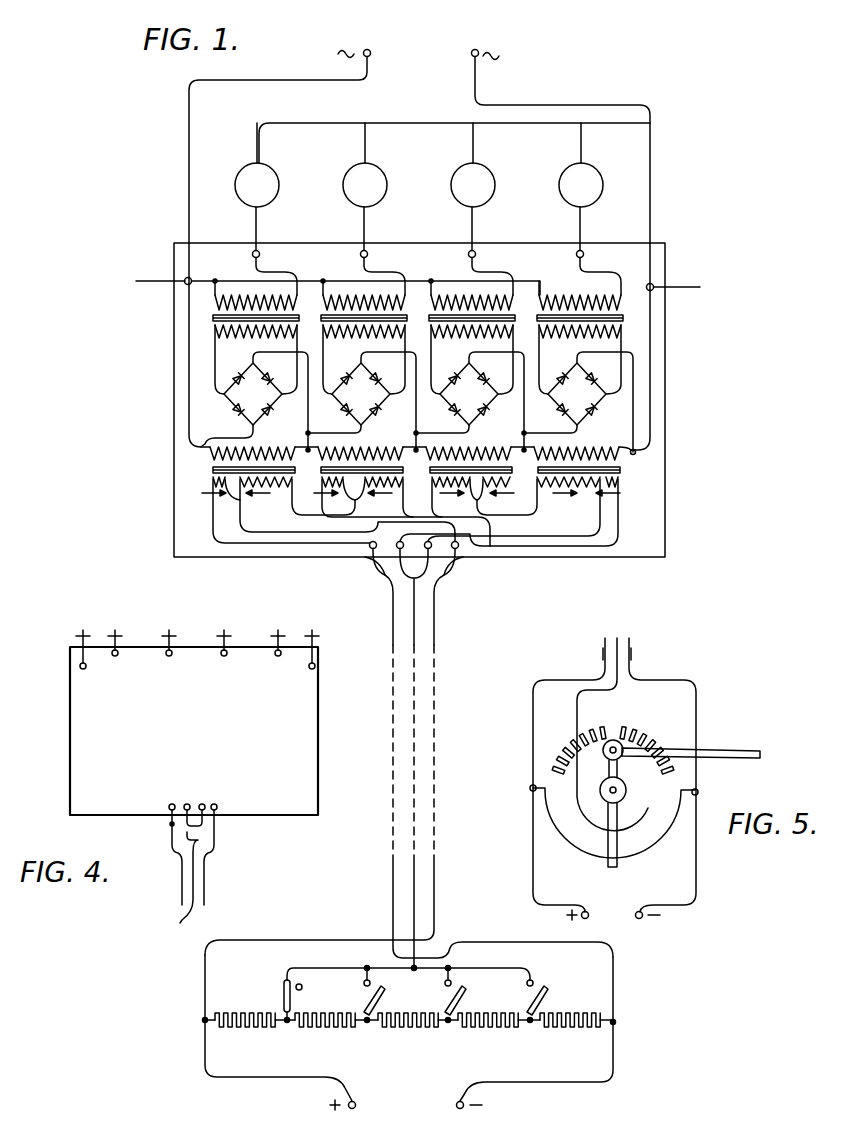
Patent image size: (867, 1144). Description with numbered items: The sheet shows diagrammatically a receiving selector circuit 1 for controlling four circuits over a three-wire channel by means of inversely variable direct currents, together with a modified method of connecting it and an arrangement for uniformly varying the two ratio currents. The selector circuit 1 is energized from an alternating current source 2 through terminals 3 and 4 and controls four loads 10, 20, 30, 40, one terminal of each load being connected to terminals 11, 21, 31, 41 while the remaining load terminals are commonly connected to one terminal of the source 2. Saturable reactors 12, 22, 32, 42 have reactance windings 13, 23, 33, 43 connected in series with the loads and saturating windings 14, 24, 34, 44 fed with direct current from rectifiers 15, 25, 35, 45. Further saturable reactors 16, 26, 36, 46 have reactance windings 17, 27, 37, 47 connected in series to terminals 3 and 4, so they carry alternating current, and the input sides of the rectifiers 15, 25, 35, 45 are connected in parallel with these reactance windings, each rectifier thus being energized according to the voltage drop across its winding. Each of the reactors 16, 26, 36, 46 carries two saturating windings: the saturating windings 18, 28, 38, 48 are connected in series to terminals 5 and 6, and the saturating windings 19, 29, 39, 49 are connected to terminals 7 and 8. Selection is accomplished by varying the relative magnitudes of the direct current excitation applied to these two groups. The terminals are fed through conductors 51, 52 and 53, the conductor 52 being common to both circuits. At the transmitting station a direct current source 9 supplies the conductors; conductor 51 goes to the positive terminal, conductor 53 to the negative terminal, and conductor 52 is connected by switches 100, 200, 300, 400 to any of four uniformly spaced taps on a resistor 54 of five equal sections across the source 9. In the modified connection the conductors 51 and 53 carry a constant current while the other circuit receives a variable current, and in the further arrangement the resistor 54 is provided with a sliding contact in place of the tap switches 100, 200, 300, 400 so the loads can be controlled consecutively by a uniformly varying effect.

In FIG. 1, the selector circuit 1 is at (672, 240).
In FIG. 4, the selector circuit 1 is at (82, 725).
In FIG. 1, the alternating current source 2 is at (418, 56).
In FIG. 1, the terminal 3 is at (330, 284).
In FIG. 1, the terminal 4 is at (682, 288).
In FIG. 1, the terminal 5 is at (369, 549).
In FIG. 1, the terminal 6 is at (397, 549).
In FIG. 1, the terminal 7 is at (431, 549).
In FIG. 1, the terminal 8 is at (458, 549).
In FIG. 1, the direct current source 9 is at (406, 1109).
In FIG. 5, the direct current source 9 is at (613, 917).
In FIG. 1, the load 10 is at (257, 186).
In FIG. 1, the terminal 11 is at (268, 255).
In FIG. 1, the saturable reactor 12 is at (213, 318).
In FIG. 1, the reactance winding 13 is at (262, 297).
In FIG. 1, the saturating winding 14 is at (256, 359).
In FIG. 1, the rectifier 15 is at (256, 402).
In FIG. 1, the saturable reactor 16 is at (213, 469).
In FIG. 1, the reactance winding 17 is at (259, 444).
In FIG. 1, the saturating winding 18 is at (207, 497).
In FIG. 1, the saturating winding 19 is at (240, 500).
In FIG. 1, the load 20 is at (365, 186).
In FIG. 1, the terminal 21 is at (376, 255).
In FIG. 1, the saturable reactor 22 is at (321, 318).
In FIG. 1, the reactance winding 23 is at (370, 297).
In FIG. 1, the saturating winding 24 is at (364, 359).
In FIG. 1, the rectifier 25 is at (363, 402).
In FIG. 1, the saturable reactor 26 is at (280, 500).
In FIG. 1, the reactance winding 27 is at (372, 444).
In FIG. 1, the saturating winding 28 is at (297, 500).
In FIG. 1, the saturating winding 29 is at (333, 498).
In FIG. 1, the load 30 is at (473, 186).
In FIG. 1, the terminal 31 is at (484, 255).
In FIG. 1, the saturable reactor 32 is at (538, 318).
In FIG. 1, the reactance winding 33 is at (478, 297).
In FIG. 1, the saturating winding 34 is at (472, 359).
In FIG. 1, the rectifier 35 is at (471, 402).
In FIG. 1, the saturable reactor 36 is at (560, 503).
In FIG. 1, the reactance winding 37 is at (480, 444).
In FIG. 1, the saturating winding 38 is at (463, 503).
In FIG. 1, the saturating winding 39 is at (500, 503).
In FIG. 1, the load 40 is at (581, 186).
In FIG. 1, the terminal 41 is at (592, 255).
In FIG. 1, the saturable reactor 42 is at (624, 320).
In FIG. 1, the reactance winding 43 is at (584, 297).
In FIG. 1, the saturating winding 44 is at (580, 359).
In FIG. 1, the rectifier 45 is at (580, 403).
In FIG. 1, the saturable reactor 46 is at (624, 472).
In FIG. 1, the reactance winding 47 is at (582, 444).
In FIG. 1, the saturating winding 48 is at (600, 503).
In FIG. 1, the saturating winding 49 is at (625, 503).
In FIG. 1, the conductor 51 is at (487, 801).
In FIG. 4, the conductor 51 is at (180, 889).
In FIG. 5, the conductor 51 is at (585, 670).
In FIG. 1, the conductor 52 is at (412, 779).
In FIG. 4, the conductor 52 is at (176, 876).
In FIG. 5, the conductor 52 is at (620, 685).
In FIG. 1, the conductor 53 is at (331, 800).
In FIG. 4, the conductor 53 is at (207, 885).
In FIG. 5, the conductor 53 is at (663, 679).
In FIG. 1, the resistor 54 is at (409, 1015).
In FIG. 5, the resistor 54 is at (640, 850).
In FIG. 1, the switch 100 is at (273, 1001).
In FIG. 1, the switch 200 is at (355, 994).
In FIG. 1, the switch 300 is at (437, 994).
In FIG. 1, the switch 400 is at (519, 1001).